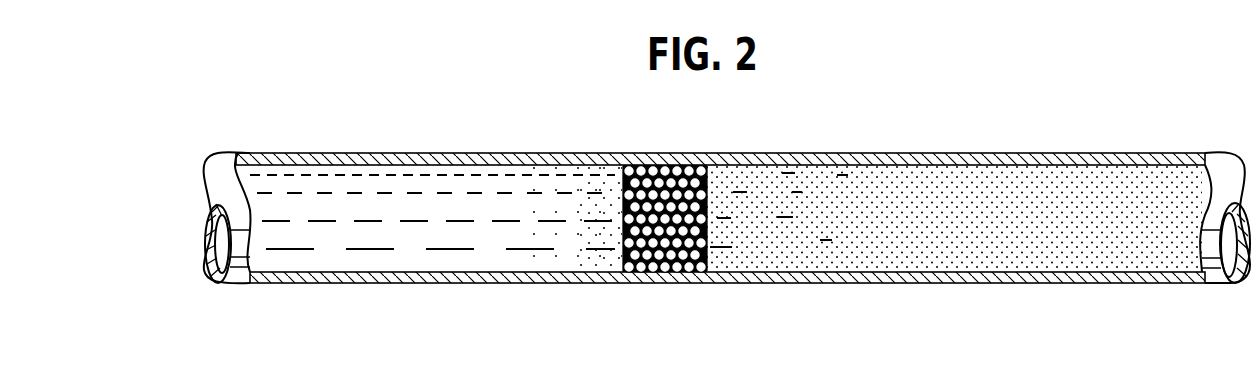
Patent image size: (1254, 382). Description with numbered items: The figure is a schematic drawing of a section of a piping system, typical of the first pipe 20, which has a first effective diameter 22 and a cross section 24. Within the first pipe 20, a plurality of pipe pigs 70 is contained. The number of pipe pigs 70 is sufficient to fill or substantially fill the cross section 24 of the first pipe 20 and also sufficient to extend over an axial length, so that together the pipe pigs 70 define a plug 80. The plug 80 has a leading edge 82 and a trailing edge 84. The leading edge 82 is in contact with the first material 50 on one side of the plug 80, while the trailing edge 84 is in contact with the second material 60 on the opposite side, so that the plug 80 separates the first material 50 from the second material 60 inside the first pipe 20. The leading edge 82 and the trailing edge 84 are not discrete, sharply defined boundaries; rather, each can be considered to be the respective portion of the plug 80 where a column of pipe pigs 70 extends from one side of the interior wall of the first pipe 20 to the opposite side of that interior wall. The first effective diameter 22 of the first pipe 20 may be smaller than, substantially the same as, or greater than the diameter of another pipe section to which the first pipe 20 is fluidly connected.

The first pipe 20 is at (1024, 102).
The first effective diameter 22 is at (299, 265).
The cross section 24 is at (355, 146).
The first material 50 is at (965, 250).
The second material 60 is at (459, 240).
The pipe pigs 70 is at (705, 255).
The plug 80 is at (663, 258).
The leading edge 82 is at (707, 207).
The trailing edge 84 is at (617, 190).